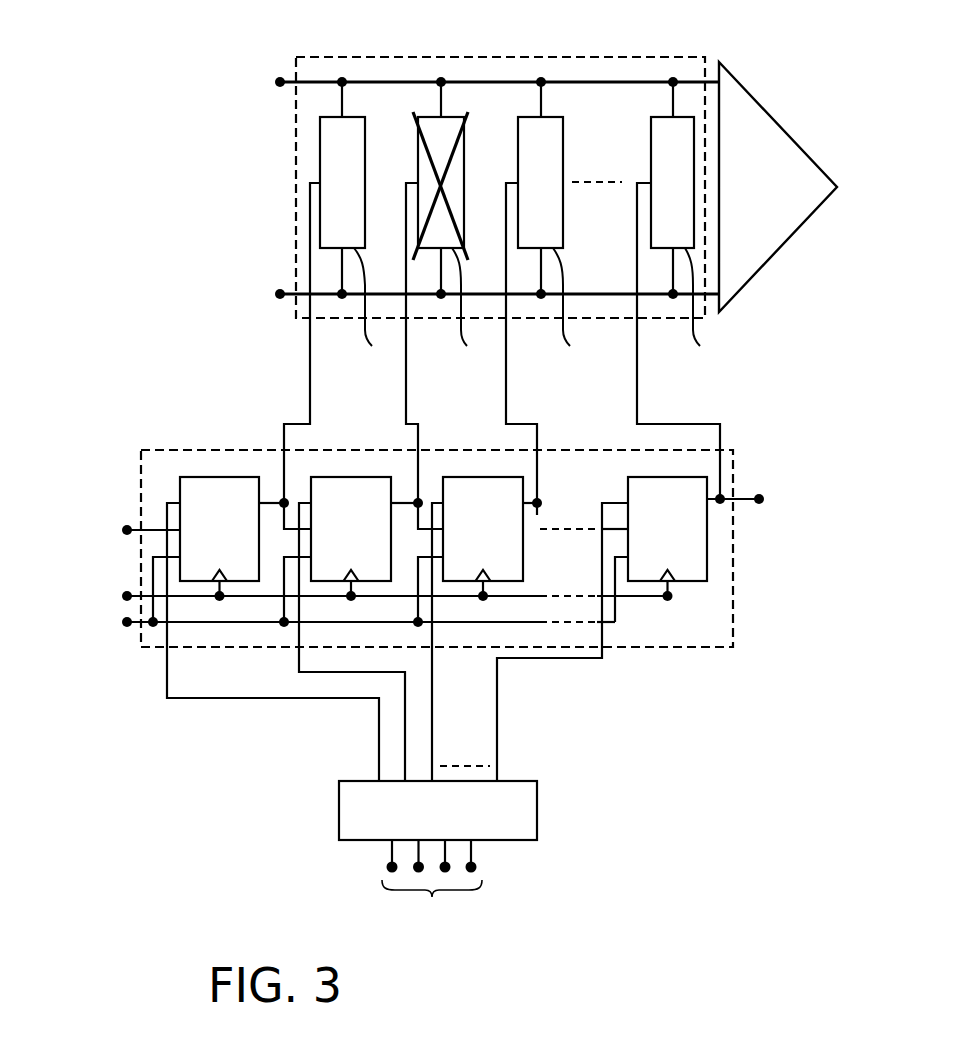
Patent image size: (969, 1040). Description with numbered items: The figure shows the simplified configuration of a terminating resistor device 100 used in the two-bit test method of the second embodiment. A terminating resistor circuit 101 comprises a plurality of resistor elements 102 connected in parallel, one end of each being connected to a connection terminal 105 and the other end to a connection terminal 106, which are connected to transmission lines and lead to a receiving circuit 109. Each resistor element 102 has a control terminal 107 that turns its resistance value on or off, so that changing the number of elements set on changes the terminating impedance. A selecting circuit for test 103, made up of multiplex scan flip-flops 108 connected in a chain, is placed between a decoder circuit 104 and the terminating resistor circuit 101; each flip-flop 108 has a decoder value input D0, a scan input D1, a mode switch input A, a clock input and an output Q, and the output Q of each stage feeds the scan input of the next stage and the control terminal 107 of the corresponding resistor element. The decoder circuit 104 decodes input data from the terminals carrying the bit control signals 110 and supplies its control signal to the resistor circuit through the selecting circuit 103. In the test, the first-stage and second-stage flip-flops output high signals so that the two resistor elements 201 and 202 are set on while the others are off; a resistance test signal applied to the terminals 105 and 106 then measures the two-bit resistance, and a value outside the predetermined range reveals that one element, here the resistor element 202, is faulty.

The terminating resistor device 100 is at (727, 726).
The terminating resistor circuit 101 is at (560, 57).
The resistor element 102 is at (636, 308).
The selecting circuit for test 103 is at (734, 592).
The decoder circuit 104 is at (537, 806).
The connection terminal 105 is at (280, 82).
The connection terminal 106 is at (280, 294).
The control terminal 107 is at (308, 183).
The multiplex scan flip-flop 108 is at (233, 477).
The receiving circuit 109 is at (757, 121).
The signals of several bits 110 is at (432, 882).
The resistor element 201 is at (371, 310).
The resistor element 202 is at (448, 240).